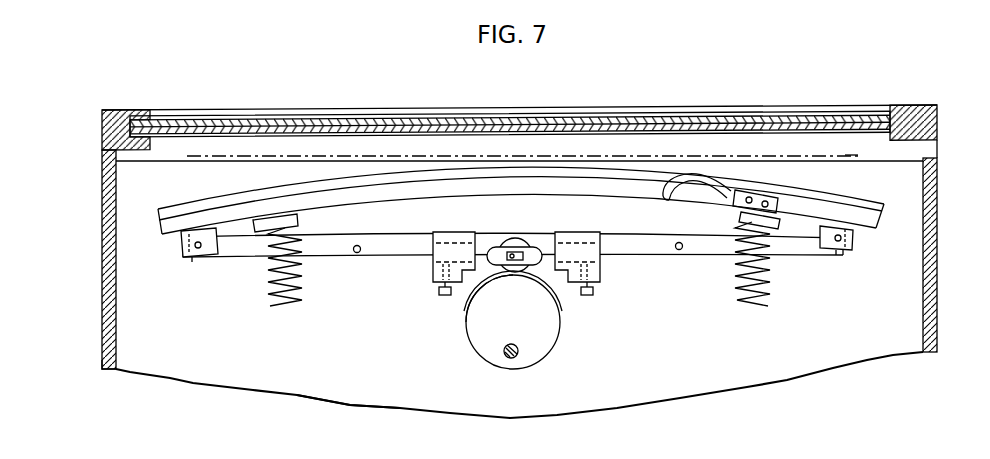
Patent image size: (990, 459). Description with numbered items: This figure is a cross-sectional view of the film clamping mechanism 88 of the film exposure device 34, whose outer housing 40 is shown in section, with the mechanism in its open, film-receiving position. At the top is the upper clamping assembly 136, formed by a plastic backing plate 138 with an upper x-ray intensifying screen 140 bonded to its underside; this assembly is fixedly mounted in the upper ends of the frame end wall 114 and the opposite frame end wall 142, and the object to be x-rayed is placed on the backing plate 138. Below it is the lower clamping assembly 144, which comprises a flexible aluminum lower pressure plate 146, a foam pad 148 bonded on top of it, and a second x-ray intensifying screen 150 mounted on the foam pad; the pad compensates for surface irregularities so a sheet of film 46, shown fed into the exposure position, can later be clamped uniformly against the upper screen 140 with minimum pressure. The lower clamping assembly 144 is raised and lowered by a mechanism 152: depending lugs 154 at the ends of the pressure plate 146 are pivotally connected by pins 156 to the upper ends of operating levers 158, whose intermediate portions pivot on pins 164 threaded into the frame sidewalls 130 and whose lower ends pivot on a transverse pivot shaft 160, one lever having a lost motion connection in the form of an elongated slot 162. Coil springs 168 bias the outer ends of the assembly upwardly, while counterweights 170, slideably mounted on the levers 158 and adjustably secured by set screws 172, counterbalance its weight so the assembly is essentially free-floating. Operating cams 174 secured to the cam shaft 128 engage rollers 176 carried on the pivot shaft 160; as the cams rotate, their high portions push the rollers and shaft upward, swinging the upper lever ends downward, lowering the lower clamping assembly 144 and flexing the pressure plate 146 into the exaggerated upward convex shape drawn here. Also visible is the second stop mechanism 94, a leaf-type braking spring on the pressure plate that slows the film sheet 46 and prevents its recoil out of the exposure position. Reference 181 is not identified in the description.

The film exposure device 34 is at (104, 383).
The outer housing 40 is at (223, 111).
The sheet of film 46 is at (311, 157).
The film clamping mechanism 88 is at (310, 411).
The second stop mechanism 94 is at (716, 182).
The frame end wall 114 is at (101, 310).
The cam shaft 128 is at (518, 351).
The frame sidewalls 130 is at (848, 172).
The upper clamping assembly 136 is at (434, 101).
The backing plate 138 is at (500, 117).
The upper x-ray intensifying screen 140 is at (643, 117).
The frame end wall 142 is at (938, 260).
The lower clamping assembly 144 is at (186, 385).
The lower pressure plate 146 is at (574, 187).
The foam pad 148 is at (326, 200).
The second x-ray intensifying screen 150 is at (204, 205).
The mechanism 152 is at (436, 323).
The depending lugs 154 is at (183, 247).
The pins 156 is at (194, 258).
The operating levers 158 is at (327, 259).
The pivot shaft 160 is at (510, 246).
The elongated slot 162 is at (523, 248).
The pivot pins 164 is at (358, 253).
The coil springs 168 is at (273, 303).
The counterweights 170 is at (433, 236).
The set screws 172 is at (438, 295).
The operating cams 174 is at (479, 338).
The rollers 176 is at (563, 307).
The inner shelf line 181 is at (103, 163).